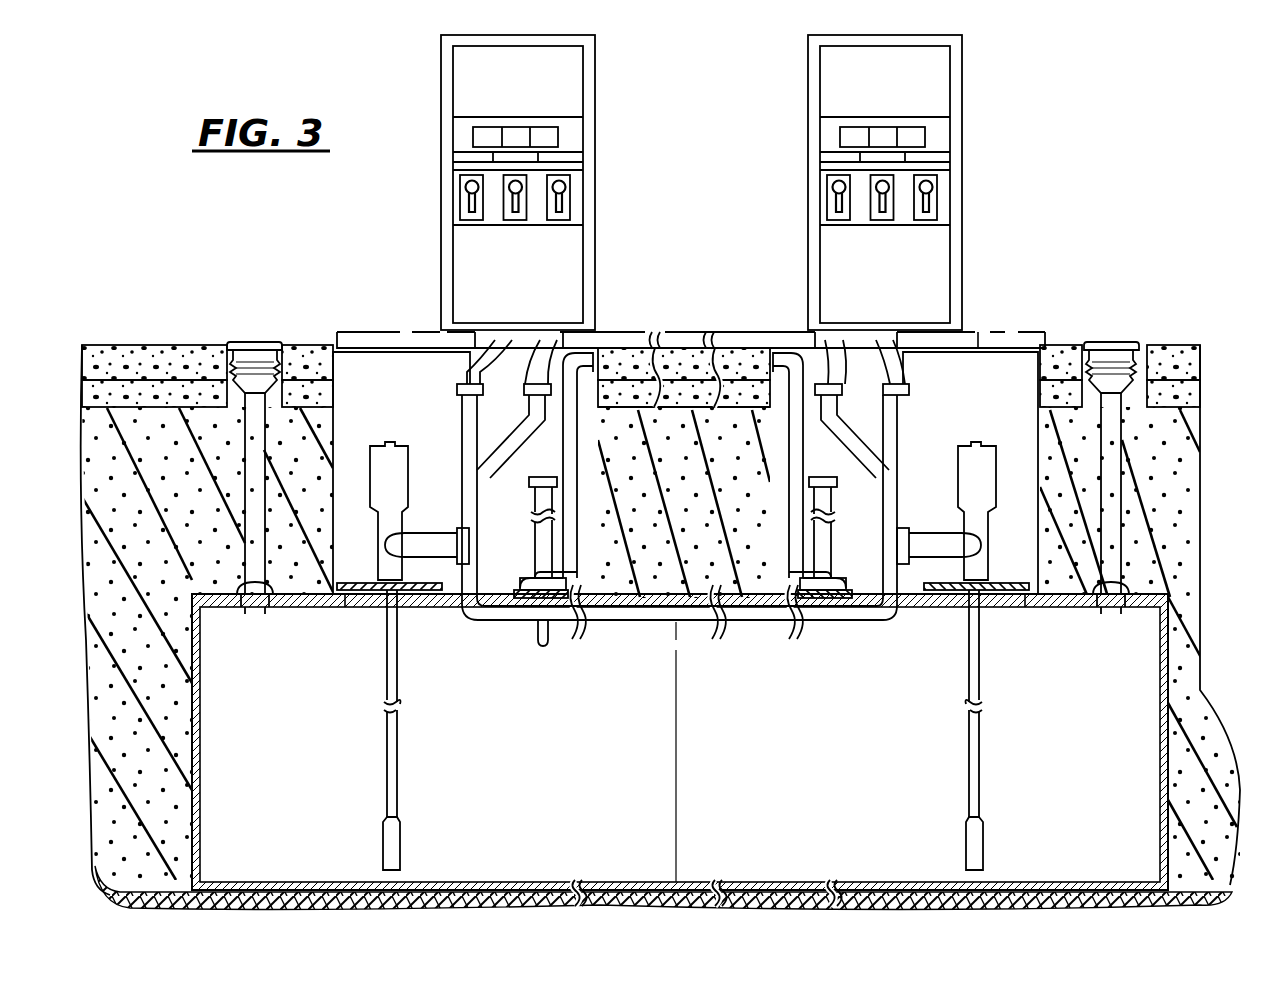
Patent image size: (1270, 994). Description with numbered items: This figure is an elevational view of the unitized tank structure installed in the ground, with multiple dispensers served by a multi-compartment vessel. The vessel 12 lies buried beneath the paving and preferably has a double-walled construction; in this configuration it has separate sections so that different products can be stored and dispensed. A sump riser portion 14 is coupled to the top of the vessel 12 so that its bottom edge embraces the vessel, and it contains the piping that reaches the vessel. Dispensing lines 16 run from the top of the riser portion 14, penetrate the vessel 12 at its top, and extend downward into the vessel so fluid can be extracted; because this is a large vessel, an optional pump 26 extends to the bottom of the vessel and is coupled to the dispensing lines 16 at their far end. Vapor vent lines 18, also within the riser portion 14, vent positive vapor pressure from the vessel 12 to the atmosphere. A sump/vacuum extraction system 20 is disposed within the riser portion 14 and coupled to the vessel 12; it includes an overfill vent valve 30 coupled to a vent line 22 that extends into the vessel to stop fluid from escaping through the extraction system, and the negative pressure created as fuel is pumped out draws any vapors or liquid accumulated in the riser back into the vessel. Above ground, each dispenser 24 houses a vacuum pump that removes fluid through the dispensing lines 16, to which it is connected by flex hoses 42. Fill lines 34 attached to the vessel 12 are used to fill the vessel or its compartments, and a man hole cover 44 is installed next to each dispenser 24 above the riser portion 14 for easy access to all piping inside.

The vessel 12 is at (1140, 636).
The sump riser portion 14 is at (333, 422).
The dispensing line 16 is at (505, 441).
The vapor vent line 18 is at (571, 450).
The sump/vacuum extraction system 20 is at (843, 553).
The secondary stage vacuum line 22 is at (830, 494).
The dispenser 24 is at (574, 82).
The pump 26 is at (424, 836).
The overfill vent valve 30 is at (537, 638).
The fill line 34 is at (252, 492).
The flex hose 42 is at (522, 348).
The man hole cover 44 is at (977, 348).